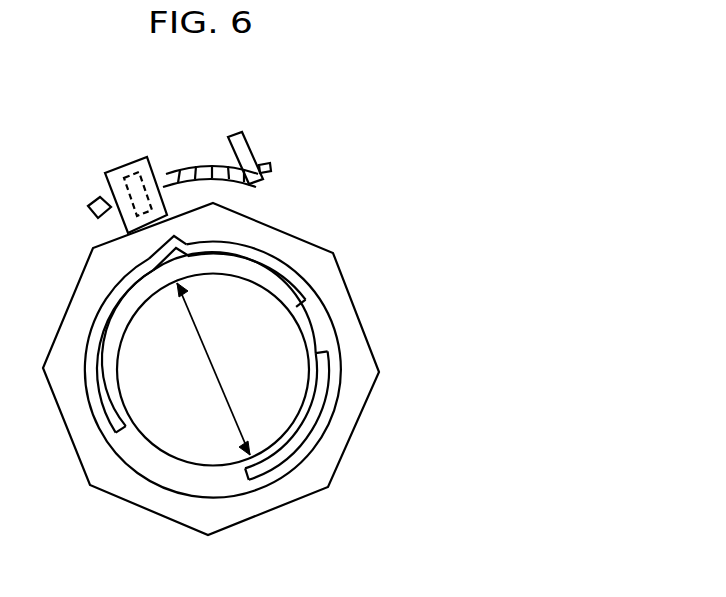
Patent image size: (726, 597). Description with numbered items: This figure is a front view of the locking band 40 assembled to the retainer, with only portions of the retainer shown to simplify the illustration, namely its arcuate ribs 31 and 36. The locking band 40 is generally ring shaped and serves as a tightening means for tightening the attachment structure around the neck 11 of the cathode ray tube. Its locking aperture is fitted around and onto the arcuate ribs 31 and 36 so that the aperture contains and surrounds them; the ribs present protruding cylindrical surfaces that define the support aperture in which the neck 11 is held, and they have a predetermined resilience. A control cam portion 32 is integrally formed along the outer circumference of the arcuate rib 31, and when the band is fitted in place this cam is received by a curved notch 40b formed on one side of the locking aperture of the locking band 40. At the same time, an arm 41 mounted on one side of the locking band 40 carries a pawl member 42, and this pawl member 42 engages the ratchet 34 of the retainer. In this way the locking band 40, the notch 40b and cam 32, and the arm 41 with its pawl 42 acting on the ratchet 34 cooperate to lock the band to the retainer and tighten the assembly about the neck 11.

The neck 11 is at (186, 440).
The arcuate rib 31 is at (107, 408).
The control cam portion 32 is at (160, 254).
The ratchet 34 is at (183, 168).
The arcuate rib 36 is at (327, 373).
The locking band 40 is at (345, 256).
The curved notch 40b is at (158, 238).
The arm 41 is at (113, 170).
The pawl member 42 is at (150, 160).